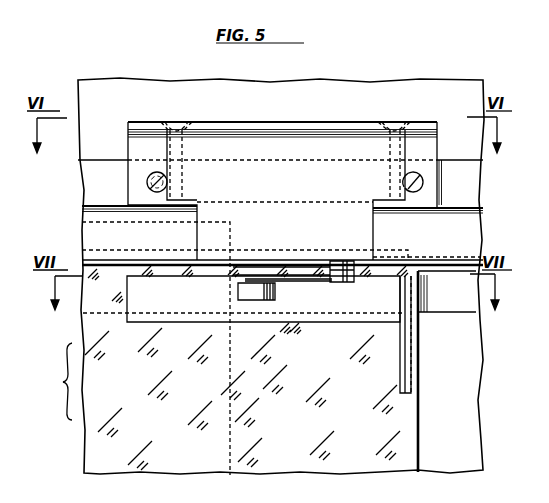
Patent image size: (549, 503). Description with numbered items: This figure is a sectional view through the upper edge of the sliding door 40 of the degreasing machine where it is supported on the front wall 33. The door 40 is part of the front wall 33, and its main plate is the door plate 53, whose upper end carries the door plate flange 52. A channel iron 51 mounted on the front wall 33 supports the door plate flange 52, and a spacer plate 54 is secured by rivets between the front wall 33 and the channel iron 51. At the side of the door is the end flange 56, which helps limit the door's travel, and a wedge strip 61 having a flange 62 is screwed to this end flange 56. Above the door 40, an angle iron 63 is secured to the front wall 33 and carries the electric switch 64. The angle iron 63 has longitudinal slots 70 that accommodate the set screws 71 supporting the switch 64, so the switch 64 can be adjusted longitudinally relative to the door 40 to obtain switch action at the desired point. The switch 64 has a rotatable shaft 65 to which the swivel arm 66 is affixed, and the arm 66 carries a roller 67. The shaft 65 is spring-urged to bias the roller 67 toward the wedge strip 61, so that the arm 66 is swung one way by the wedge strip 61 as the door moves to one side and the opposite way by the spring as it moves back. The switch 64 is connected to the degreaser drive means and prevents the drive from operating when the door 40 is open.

The front wall 33 is at (281, 276).
The sliding door 40 is at (50, 381).
The channel iron 51 is at (356, 210).
The door plate flange 52 is at (155, 256).
The door plate 53 is at (282, 365).
The spacer plate 54 is at (447, 291).
The end flange 56 is at (419, 438).
The wedge strip 61 is at (244, 299).
The flange 62 is at (402, 352).
The angle iron 63 is at (258, 130).
The electric switch 64 is at (282, 191).
The rotatable shaft 65 is at (353, 270).
The swivel arm 66 is at (282, 285).
The roller 67 is at (240, 289).
The longitudinal slots 70 is at (196, 126).
The set screws 71 is at (177, 126).